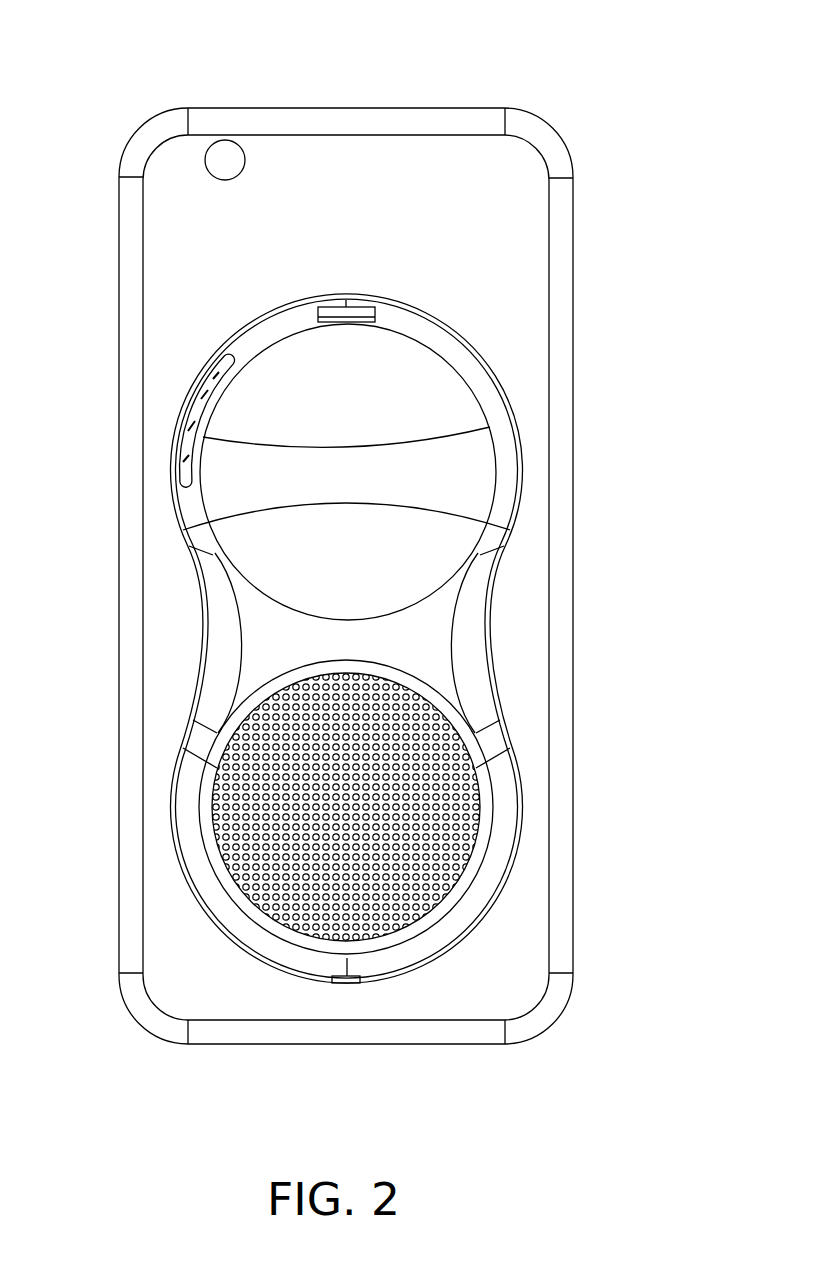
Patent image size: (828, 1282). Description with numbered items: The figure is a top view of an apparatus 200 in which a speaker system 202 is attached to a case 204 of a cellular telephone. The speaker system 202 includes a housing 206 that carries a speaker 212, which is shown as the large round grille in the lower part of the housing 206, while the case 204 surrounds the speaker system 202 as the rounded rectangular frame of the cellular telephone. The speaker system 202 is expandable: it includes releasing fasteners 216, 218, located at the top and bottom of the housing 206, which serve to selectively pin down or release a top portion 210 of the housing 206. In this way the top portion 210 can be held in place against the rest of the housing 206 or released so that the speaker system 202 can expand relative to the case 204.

The apparatus 200 is at (164, 68).
The speaker system 202 is at (516, 419).
The case 204 is at (520, 219).
The housing 206 is at (463, 630).
The top portion 210 is at (217, 611).
The speaker 212 is at (408, 801).
The releasing fastener 216 is at (330, 294).
The releasing fastener 218 is at (333, 981).